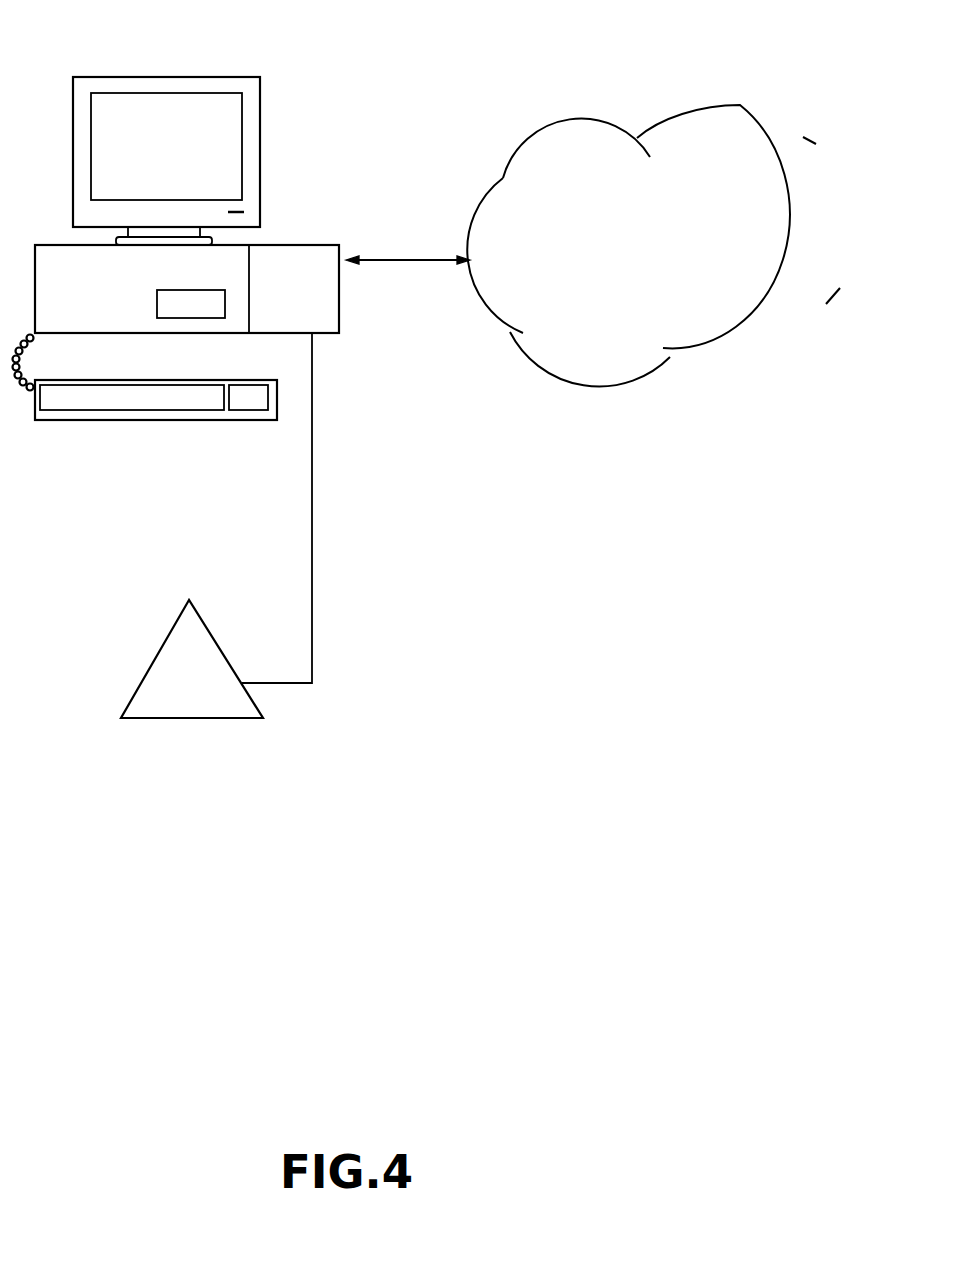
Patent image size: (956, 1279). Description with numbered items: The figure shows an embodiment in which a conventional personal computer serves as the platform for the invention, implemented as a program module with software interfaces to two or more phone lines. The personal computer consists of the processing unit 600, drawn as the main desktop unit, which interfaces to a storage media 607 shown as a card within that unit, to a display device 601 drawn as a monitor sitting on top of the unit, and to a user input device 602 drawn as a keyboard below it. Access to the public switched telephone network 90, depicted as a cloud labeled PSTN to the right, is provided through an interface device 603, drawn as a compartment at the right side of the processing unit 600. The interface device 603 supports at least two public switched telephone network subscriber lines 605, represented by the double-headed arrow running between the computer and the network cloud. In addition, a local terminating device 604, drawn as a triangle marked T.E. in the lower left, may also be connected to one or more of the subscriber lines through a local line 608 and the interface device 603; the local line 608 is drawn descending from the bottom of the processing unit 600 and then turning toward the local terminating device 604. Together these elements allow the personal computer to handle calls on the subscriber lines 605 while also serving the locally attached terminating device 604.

The public switched telephone network 90 is at (720, 103).
The processing unit 600 is at (70, 335).
The display device 601 is at (231, 77).
The user input device 602 is at (170, 420).
The interface device 603 is at (328, 333).
The local terminating device 604 is at (218, 718).
The public switched telephone network subscriber lines 605 is at (373, 261).
The storage media 607 is at (180, 318).
The local line 608 is at (312, 488).